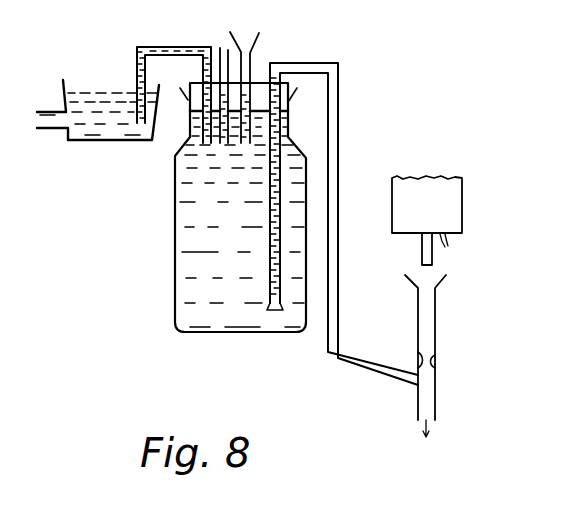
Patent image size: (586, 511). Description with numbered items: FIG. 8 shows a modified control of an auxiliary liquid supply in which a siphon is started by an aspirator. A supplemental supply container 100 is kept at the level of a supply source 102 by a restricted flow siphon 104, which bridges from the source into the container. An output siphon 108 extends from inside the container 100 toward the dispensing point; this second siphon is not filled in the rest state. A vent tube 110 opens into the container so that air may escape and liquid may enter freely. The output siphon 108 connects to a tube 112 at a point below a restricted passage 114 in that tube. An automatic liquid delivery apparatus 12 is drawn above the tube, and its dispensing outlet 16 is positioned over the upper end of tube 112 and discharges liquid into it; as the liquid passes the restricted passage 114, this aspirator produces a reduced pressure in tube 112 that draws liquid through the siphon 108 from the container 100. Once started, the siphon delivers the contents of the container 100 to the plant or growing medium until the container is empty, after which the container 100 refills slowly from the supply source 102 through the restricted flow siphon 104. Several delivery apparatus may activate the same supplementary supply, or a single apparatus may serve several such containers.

The nutrient container 12 is at (442, 177).
The dispensing outlet 16 is at (421, 245).
The container 100 is at (178, 285).
The supply source 102 is at (92, 143).
The restricted flow siphon 104 is at (136, 50).
The output siphon 108 is at (333, 140).
The vent tube 110 is at (230, 41).
The tube 112 is at (437, 302).
The restricted passage 114 is at (437, 362).